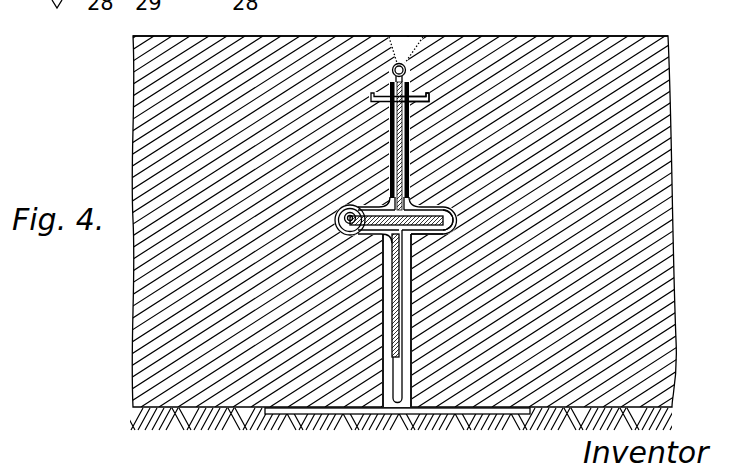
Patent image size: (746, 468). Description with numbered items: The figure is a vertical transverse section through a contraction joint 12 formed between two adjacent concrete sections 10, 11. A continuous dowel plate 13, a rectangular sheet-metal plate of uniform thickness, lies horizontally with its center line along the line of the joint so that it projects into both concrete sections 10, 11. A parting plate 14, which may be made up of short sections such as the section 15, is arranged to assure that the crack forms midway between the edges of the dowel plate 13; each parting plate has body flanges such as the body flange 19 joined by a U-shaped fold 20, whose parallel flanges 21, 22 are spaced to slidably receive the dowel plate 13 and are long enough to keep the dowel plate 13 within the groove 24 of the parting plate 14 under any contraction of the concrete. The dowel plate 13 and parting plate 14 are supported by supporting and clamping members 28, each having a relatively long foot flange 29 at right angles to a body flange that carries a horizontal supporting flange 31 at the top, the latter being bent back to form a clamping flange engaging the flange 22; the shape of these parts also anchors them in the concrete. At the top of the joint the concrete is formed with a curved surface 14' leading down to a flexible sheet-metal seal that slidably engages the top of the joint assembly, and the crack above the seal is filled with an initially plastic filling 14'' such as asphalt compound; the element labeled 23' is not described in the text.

The concrete section 10 is at (212, 22).
The concrete section 11 is at (404, 60).
The contraction joint 12 is at (388, 94).
The dowel plate 13 is at (446, 222).
The parting plate 14 is at (377, 119).
The curved surface 14' is at (379, 106).
The plastic filling 14'' is at (395, 42).
The parting plate section 15 is at (418, 102).
The body flange 19 is at (390, 338).
The U-shaped fold 20 is at (340, 231).
The parallel flange 21 is at (360, 236).
The parallel flange 22 is at (338, 210).
The channel end 23' is at (583, 245).
The groove 24 is at (346, 215).
The supporting and clamping member 28 is at (386, 317).
The foot flange 29 is at (452, 405).
The horizontal supporting flange 31 is at (432, 240).